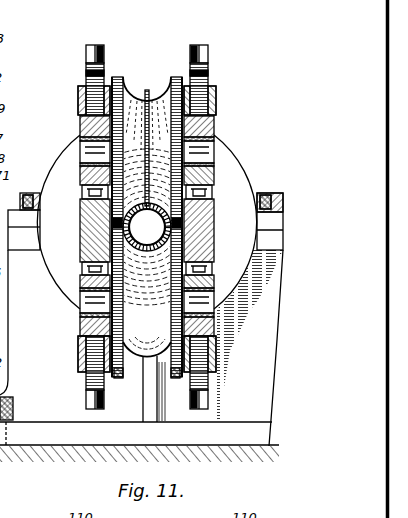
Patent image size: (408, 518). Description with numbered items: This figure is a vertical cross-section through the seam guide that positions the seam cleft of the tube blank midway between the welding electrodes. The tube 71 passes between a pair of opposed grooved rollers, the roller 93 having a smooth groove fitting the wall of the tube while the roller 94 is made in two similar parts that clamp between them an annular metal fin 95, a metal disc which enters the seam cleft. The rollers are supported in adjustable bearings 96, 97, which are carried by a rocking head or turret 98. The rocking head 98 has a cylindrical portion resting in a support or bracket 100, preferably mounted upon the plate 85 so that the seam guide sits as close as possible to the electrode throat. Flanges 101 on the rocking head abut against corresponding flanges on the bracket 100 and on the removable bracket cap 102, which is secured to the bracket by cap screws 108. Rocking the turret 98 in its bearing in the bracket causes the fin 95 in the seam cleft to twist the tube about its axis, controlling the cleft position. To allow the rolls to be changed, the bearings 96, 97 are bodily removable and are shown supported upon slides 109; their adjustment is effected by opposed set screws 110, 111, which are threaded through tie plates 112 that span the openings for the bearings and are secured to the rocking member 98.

The tube 71 is at (82, 247).
The plate 85 is at (17, 458).
The roller 93 is at (134, 365).
The roller 94 is at (131, 78).
The annular metal fin 95 is at (149, 90).
The adjustable bearing 96 is at (80, 325).
The adjustable bearing 97 is at (80, 125).
The rocking head 98 is at (215, 222).
The support 100 is at (62, 394).
The flanges 101 is at (239, 168).
The bracket cap 102 is at (13, 209).
The cap screws 108 is at (268, 193).
The slides 109 is at (83, 190).
The set screw 110 is at (88, 44).
The set screw 111 is at (88, 387).
The tie plates 112 is at (78, 87).